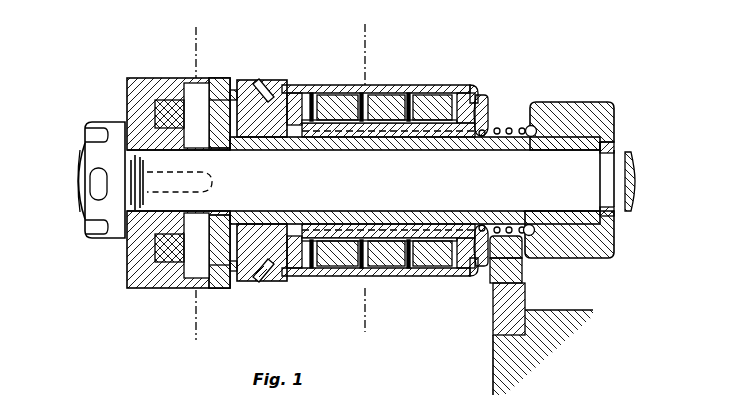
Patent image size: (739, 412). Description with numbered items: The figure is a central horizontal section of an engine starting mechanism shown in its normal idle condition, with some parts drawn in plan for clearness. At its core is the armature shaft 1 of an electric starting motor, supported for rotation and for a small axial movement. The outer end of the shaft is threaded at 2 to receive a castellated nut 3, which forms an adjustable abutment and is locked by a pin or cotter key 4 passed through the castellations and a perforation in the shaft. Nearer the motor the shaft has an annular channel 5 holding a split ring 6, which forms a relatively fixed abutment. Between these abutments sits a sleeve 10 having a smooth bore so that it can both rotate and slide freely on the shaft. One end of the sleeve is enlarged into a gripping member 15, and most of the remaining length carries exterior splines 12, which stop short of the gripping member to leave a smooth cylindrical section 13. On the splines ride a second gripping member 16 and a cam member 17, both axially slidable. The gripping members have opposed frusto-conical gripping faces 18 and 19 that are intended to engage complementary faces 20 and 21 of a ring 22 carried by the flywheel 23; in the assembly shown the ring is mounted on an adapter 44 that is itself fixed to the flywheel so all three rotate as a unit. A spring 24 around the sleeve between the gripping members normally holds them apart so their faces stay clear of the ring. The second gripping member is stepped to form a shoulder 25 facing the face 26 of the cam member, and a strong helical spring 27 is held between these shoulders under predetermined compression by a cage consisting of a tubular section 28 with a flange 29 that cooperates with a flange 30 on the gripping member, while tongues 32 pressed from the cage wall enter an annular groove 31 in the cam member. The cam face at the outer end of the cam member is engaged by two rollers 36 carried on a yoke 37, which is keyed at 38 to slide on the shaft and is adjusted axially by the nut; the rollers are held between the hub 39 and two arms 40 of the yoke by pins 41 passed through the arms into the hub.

The armature shaft 1 is at (543, 175).
The threads 2 is at (140, 196).
The nut 3 is at (88, 232).
The pin or cotter key 4 is at (30, 199).
The annular channel 5 is at (660, 170).
The split ring 6 is at (614, 146).
The sleeve 10 is at (357, 150).
The exterior splines 12 is at (475, 128).
The smooth cylindrical section 13 is at (519, 128).
The gripping member 15 is at (598, 103).
The second gripping member 16 is at (478, 280).
The cam member 17 is at (247, 80).
The gripping face 18 is at (530, 105).
The gripping face 19 is at (486, 128).
The complementary face 20 is at (524, 283).
The complementary face 21 is at (490, 268).
The ring 22 is at (524, 270).
The flywheel 23 is at (585, 340).
The spring 24 is at (498, 128).
The shoulder 25 is at (462, 84).
The face 26 is at (294, 98).
The helical spring 27 is at (430, 97).
The tubular section 28 is at (330, 85).
The flange 29 is at (470, 100).
The flange 30 is at (462, 268).
The annular groove 31 is at (256, 272).
The tongues 32 is at (262, 94).
The roller 36 is at (165, 113).
The yoke 37 is at (127, 78).
The key 38 is at (214, 182).
The hub 39 is at (167, 280).
The arms 40 is at (222, 78).
The pins 41 is at (193, 95).
The adapter 44 is at (525, 300).